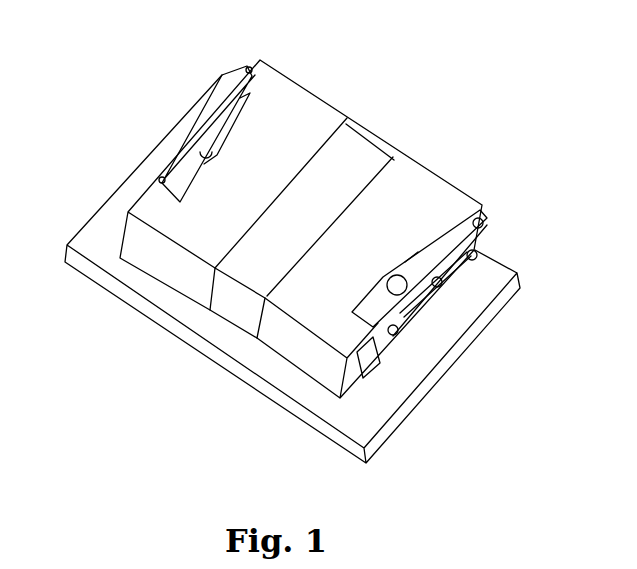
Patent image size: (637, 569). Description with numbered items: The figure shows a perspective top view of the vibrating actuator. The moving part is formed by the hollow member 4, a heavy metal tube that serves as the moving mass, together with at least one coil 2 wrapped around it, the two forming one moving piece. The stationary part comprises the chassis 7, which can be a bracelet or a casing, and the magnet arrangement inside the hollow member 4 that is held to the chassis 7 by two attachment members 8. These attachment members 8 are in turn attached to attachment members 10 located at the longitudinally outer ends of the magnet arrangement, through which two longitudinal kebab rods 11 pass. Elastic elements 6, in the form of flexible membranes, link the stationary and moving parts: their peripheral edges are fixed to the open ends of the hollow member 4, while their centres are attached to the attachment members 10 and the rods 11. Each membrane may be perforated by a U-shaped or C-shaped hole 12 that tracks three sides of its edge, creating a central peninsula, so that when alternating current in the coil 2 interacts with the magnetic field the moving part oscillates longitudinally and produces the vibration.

The coil 2 is at (230, 310).
The hollow member 4 is at (145, 260).
The elastic elements 6 is at (160, 176).
The chassis 7 is at (97, 245).
The attachment members 8 is at (200, 150).
The attachment members 10 is at (187, 167).
The kebab rods 11 is at (435, 288).
The C-shaped or U-shaped hole 12 is at (415, 312).